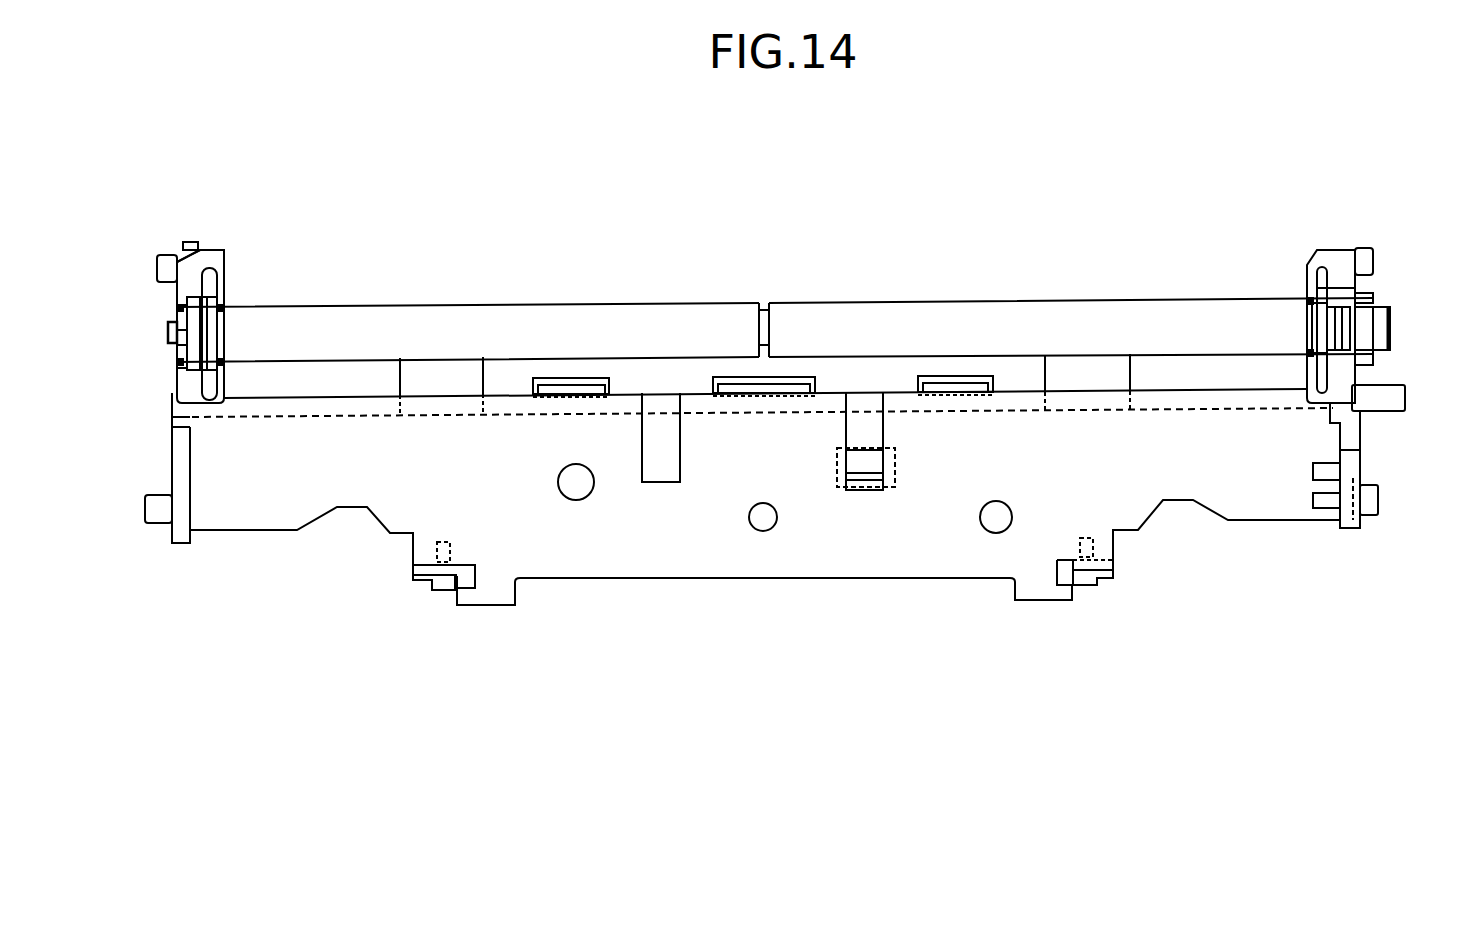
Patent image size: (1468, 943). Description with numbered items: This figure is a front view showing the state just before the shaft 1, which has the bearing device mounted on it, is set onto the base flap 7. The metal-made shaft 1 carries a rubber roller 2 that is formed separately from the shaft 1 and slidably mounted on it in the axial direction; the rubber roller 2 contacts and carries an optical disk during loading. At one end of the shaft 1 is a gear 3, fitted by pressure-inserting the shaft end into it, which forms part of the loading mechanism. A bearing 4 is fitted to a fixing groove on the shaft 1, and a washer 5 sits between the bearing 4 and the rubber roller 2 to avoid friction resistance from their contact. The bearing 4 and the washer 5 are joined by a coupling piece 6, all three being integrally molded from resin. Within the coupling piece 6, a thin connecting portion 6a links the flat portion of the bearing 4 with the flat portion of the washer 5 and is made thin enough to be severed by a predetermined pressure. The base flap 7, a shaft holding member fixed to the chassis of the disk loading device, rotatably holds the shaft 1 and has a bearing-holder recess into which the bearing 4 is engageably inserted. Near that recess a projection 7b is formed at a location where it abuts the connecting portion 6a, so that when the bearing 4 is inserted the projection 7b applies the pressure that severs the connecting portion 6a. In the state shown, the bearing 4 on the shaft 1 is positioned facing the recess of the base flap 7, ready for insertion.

The shaft 1 is at (170, 335).
The rubber roller 2 is at (598, 304).
The gear 3 is at (1375, 298).
The bearing 4 is at (177, 317).
The washer 5 is at (224, 318).
The coupling piece 6 is at (183, 262).
The connecting portion 6a is at (177, 310).
The base flap 7 is at (766, 578).
The projection 7b is at (218, 282).